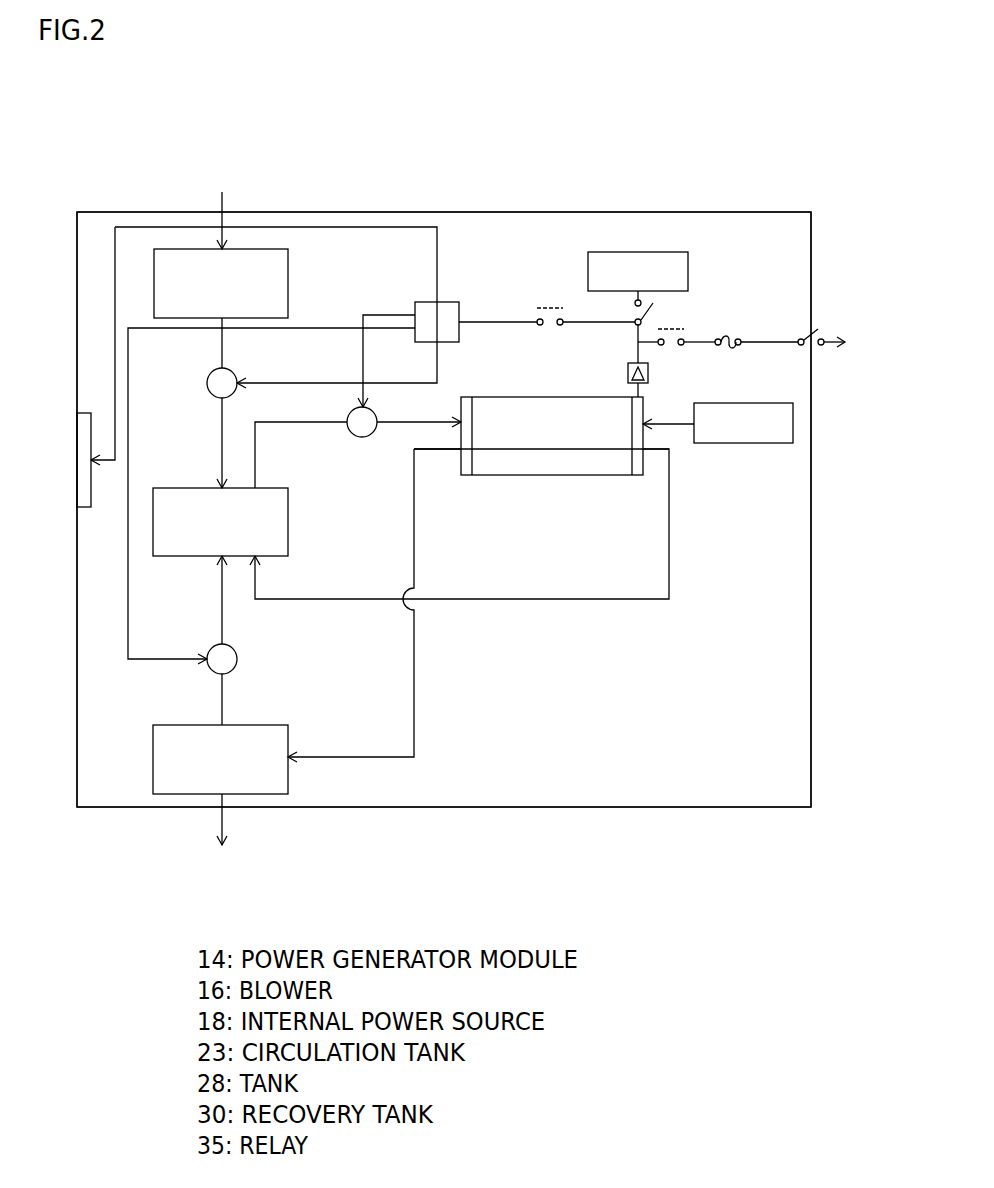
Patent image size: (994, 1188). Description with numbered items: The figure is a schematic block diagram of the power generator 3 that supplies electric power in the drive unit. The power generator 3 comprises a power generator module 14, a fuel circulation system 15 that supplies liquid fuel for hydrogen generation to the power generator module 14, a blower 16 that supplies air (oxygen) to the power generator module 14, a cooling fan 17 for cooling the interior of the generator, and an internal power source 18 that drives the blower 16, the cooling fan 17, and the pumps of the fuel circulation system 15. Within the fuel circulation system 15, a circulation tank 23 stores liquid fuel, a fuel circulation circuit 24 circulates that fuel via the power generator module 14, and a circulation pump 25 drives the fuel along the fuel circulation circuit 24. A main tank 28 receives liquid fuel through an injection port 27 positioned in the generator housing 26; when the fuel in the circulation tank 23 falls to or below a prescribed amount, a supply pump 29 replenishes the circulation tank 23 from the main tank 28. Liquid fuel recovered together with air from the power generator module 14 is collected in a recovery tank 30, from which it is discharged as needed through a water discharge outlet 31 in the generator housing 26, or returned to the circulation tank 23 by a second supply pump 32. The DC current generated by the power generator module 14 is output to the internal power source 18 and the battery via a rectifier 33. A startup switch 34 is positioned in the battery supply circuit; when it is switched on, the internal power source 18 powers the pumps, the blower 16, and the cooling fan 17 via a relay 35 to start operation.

The power generator 3 is at (651, 198).
The power generator module 14 is at (548, 397).
The fuel circulation system 15 is at (490, 608).
The blower 16 is at (733, 443).
The cooling fan 17 is at (82, 479).
The internal power source 18 is at (688, 270).
The circulation tank 23 is at (177, 488).
The fuel circulation circuit 24 is at (603, 601).
The circulation pump 25 is at (358, 437).
The generator housing 26 is at (515, 808).
The injection port 27 is at (218, 201).
The main tank 28 is at (288, 283).
The supply pump 29 is at (207, 385).
The recovery tank 30 is at (288, 785).
The water discharge outlet 31 is at (220, 818).
The supply pump 32 is at (208, 678).
The rectifier 33 is at (648, 373).
The startup switch 34 is at (803, 349).
The relay 35 is at (447, 302).